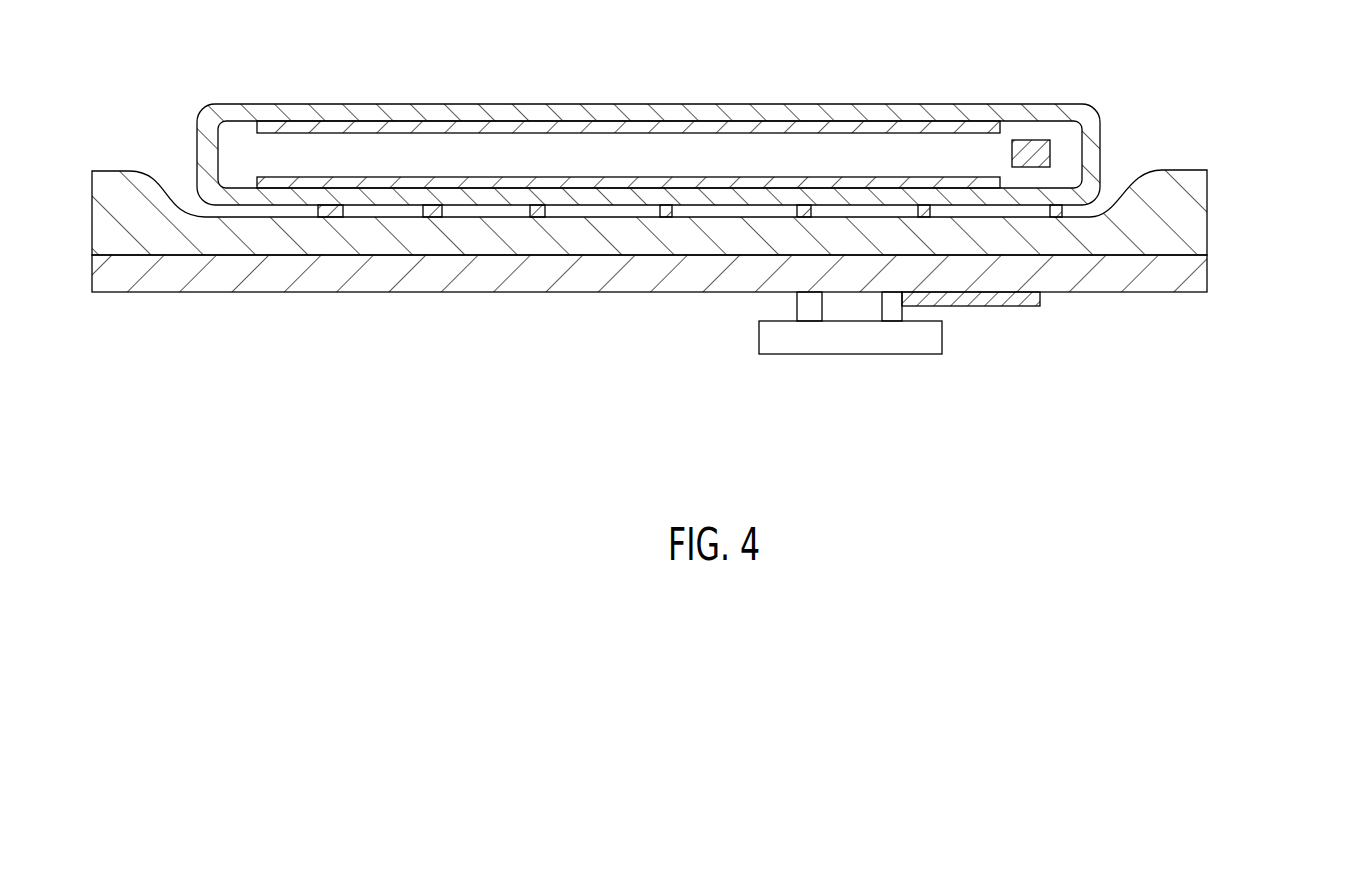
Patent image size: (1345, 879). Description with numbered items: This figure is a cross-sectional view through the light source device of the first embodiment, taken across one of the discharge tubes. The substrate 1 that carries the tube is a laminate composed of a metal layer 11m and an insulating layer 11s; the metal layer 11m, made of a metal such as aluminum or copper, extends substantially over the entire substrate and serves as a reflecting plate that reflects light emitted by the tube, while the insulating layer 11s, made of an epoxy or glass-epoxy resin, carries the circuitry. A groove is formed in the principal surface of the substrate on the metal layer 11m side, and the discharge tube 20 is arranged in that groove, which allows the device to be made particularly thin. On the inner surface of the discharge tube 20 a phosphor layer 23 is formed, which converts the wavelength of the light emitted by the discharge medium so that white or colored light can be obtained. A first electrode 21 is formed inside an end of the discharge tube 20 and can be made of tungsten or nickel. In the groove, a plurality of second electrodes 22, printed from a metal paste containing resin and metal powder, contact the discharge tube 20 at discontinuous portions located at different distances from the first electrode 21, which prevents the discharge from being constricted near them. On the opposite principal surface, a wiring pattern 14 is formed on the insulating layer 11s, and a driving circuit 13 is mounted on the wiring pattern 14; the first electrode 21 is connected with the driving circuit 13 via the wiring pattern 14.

The light source device 1 is at (718, 237).
The metal layer 11m is at (1197, 196).
The insulating layer 11s is at (998, 306).
The driving circuit 13 is at (834, 348).
The wiring pattern 14 is at (990, 307).
The discharge tube 20 is at (450, 103).
The first electrode 21 is at (1033, 152).
The second electrodes 22 is at (328, 220).
The phosphor layer 23 is at (725, 121).